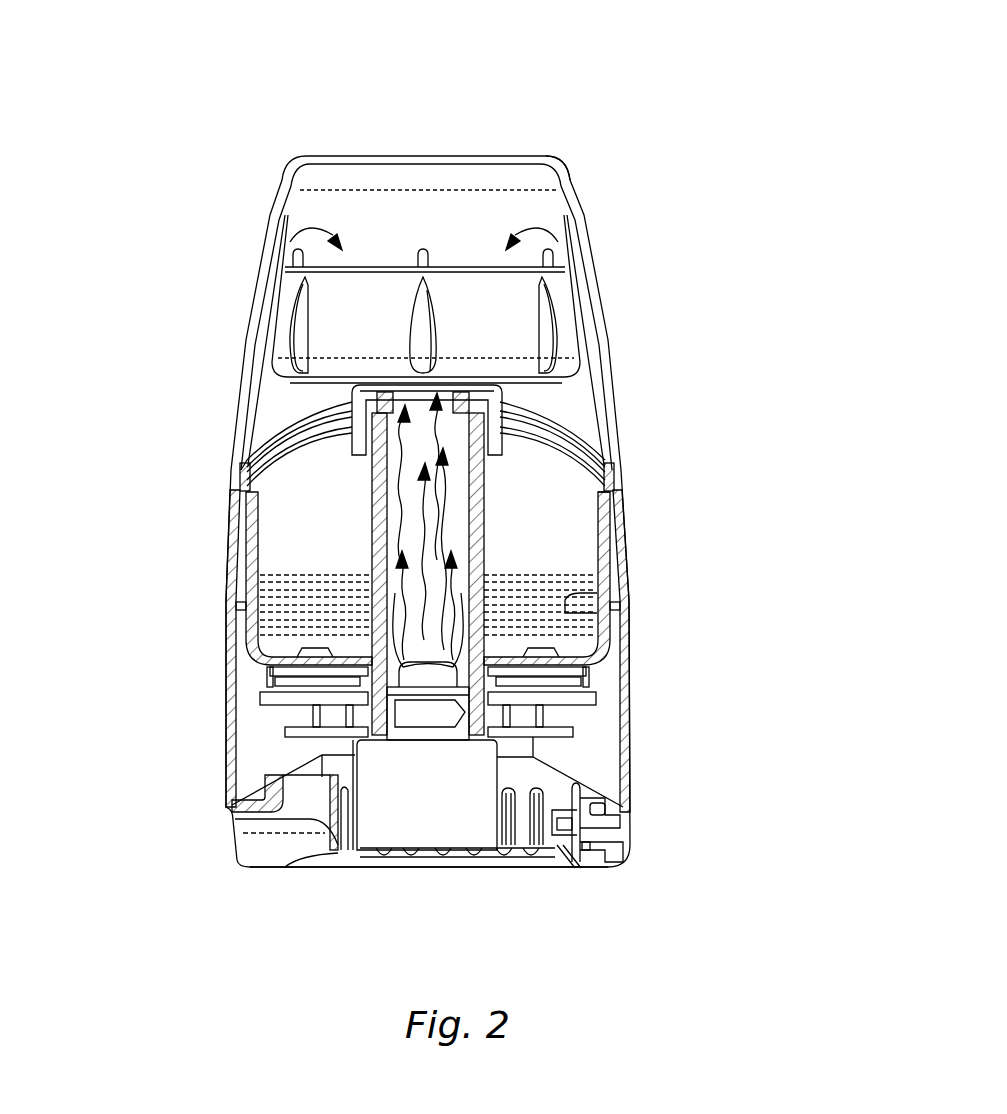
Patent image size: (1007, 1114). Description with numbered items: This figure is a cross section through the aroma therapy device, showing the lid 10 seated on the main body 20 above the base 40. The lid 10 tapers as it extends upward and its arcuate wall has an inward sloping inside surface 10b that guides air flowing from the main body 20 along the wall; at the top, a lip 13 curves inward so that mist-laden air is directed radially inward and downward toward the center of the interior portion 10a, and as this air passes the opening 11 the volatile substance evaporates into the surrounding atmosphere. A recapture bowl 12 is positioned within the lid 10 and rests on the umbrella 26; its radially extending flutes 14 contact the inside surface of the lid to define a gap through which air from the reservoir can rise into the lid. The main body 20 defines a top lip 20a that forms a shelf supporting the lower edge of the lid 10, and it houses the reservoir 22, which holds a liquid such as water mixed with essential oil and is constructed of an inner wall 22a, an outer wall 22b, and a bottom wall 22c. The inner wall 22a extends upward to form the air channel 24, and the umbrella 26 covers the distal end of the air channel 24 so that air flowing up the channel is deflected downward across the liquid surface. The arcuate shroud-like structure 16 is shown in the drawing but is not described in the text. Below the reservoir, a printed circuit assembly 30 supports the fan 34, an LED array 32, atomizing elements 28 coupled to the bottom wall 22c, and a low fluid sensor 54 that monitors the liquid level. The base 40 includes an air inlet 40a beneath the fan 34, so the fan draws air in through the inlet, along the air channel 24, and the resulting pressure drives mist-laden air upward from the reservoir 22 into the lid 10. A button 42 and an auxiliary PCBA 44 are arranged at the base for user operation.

The lid 10 is at (272, 208).
The interior portion of the lid 10a is at (401, 234).
The inward sloping inside surface 10b is at (547, 170).
The opening 11 is at (387, 170).
The recapture bowl 12 is at (510, 290).
The lip 13 is at (540, 156).
The flutes 14 is at (550, 298).
The shroud arches 16 is at (327, 498).
The main body 20 is at (228, 544).
The top lip 20a is at (236, 472).
The reservoir 22 is at (278, 520).
The inner wall 22a is at (560, 500).
The outer wall 22b is at (603, 532).
The bottom wall 22c is at (292, 666).
The air channel 24 is at (462, 557).
The umbrella 26 is at (243, 420).
The atomizing element 28 is at (304, 656).
The printed circuit assembly 30 is at (555, 732).
The LED array 32 is at (266, 703).
The fan 34 is at (403, 718).
The base 40 is at (413, 808).
The air inlet 40a is at (440, 867).
The button 42 is at (607, 833).
The auxiliary PCBA 44 is at (584, 850).
The low fluid sensor 54 is at (582, 603).